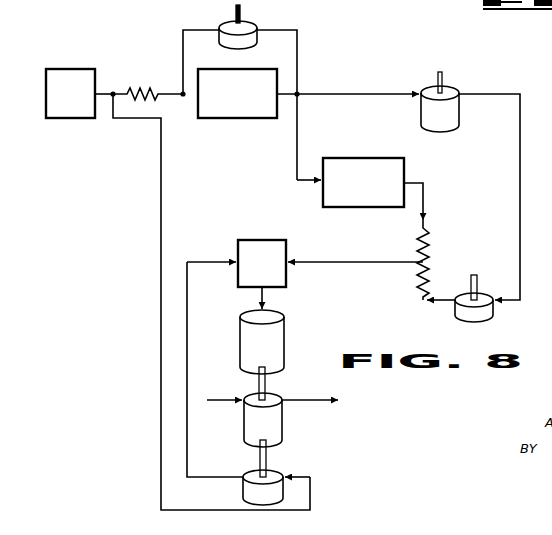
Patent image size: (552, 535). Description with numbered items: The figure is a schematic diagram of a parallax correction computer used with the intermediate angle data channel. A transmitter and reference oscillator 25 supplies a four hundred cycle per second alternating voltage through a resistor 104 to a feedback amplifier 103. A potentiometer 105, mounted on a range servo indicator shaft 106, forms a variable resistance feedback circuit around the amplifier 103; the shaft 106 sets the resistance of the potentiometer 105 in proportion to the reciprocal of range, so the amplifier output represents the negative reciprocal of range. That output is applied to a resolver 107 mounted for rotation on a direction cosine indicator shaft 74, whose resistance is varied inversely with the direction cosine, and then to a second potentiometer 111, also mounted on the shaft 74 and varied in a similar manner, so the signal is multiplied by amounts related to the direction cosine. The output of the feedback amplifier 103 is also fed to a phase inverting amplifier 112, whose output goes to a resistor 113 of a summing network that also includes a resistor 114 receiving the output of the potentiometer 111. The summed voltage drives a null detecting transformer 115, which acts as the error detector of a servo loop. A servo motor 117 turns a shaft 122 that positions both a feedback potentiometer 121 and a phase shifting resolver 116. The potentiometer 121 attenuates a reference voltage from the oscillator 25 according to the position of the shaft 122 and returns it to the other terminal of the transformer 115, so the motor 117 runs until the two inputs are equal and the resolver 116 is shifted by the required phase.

The transmitter and reference oscillator 25 is at (78, 118).
The resistor 104 is at (157, 75).
The potentiometer 105 is at (256, 27).
The range servo indicator shaft 106 is at (233, 17).
The feedback amplifier 103 is at (225, 118).
The direction cosine indicator shaft 74 is at (437, 81).
The resolver 107 is at (456, 122).
The phase inverting amplifier 112 is at (323, 202).
The resistor 113 is at (428, 250).
The resistor 114 is at (420, 280).
The second potentiometer 111 is at (470, 318).
The null detecting transformer 115 is at (257, 240).
The servo motor 117 is at (285, 331).
The phase shifting resolver 116 is at (279, 399).
The feedback potentiometer 121 is at (279, 476).
The shaft 122 is at (259, 457).